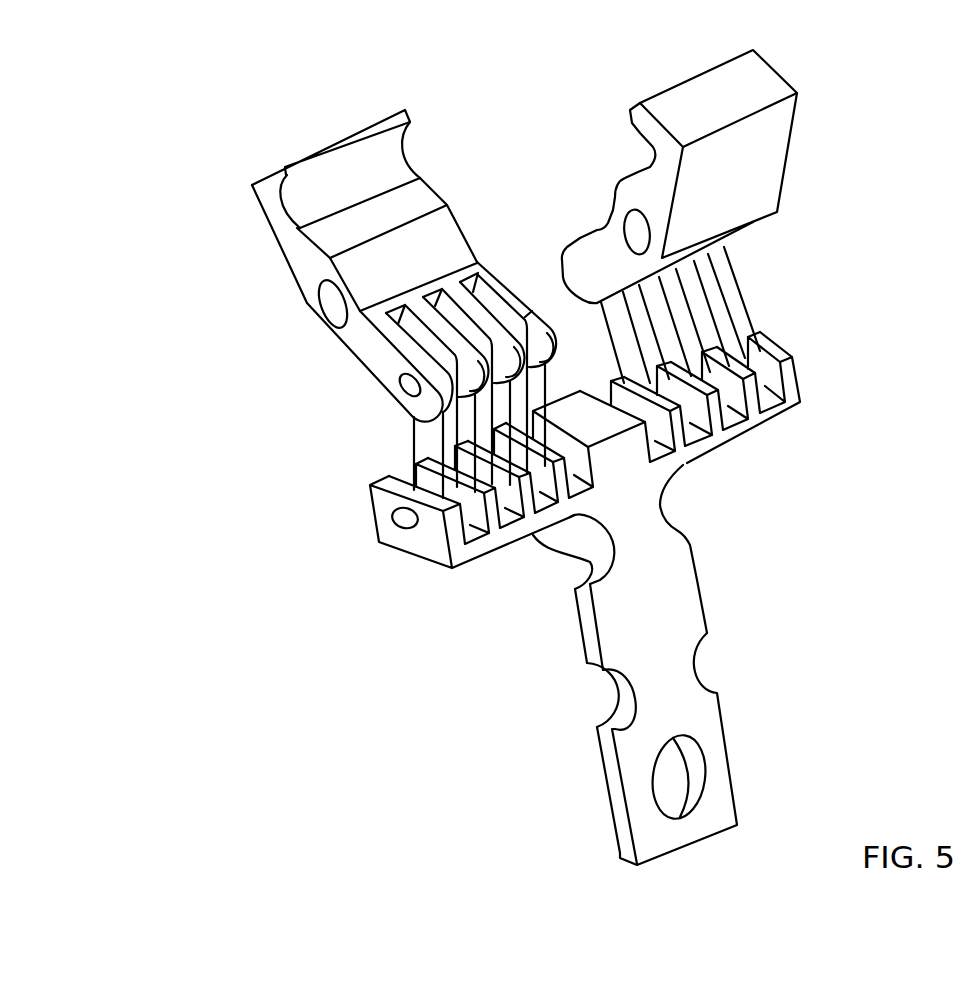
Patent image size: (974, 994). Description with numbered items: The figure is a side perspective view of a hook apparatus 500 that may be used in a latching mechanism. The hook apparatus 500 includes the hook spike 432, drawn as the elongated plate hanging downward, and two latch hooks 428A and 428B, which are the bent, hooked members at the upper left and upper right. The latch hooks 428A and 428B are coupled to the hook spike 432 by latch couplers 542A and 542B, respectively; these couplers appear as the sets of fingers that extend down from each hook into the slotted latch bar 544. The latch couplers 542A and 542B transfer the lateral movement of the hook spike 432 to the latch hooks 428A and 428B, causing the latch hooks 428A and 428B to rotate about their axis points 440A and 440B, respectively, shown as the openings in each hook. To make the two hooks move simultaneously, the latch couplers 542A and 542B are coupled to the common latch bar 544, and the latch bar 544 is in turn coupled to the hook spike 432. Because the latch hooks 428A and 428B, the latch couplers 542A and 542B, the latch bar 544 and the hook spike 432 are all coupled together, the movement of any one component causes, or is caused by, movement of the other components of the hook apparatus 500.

The hook apparatus 500 is at (179, 104).
The latch hook 428A is at (322, 148).
The latch hook 428B is at (640, 103).
The axis point 440A is at (317, 309).
The axis point 440B is at (640, 240).
The latch coupler 542A is at (399, 452).
The latch coupler 542B is at (733, 304).
The latch bar 544 is at (800, 394).
The hook spike 432 is at (675, 592).